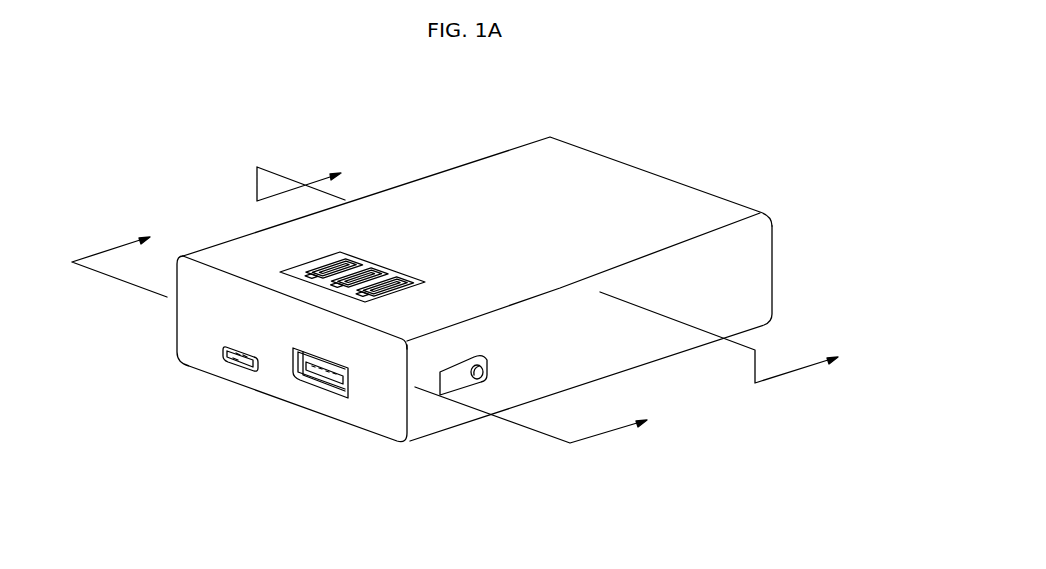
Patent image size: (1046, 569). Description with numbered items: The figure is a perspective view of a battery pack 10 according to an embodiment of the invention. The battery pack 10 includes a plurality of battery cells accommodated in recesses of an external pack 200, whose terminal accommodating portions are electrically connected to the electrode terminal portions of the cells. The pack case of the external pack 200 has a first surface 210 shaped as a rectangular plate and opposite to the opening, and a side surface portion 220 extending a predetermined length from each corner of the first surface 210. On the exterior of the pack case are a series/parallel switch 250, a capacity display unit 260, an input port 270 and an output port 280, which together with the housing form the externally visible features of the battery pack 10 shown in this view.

The battery pack 10 is at (727, 125).
The external pack 200 is at (536, 165).
The first surface 210 is at (188, 340).
The side surface portion 220 is at (467, 177).
The series/parallel switch 250 is at (440, 371).
The capacity display unit 260 is at (298, 267).
The input port 270 is at (235, 368).
The output port 280 is at (318, 374).